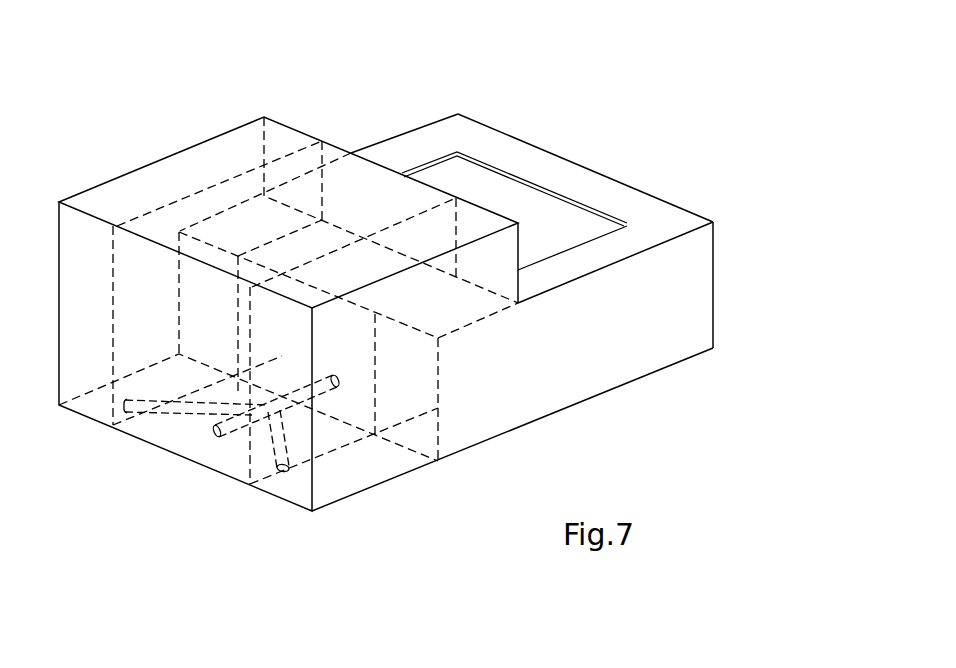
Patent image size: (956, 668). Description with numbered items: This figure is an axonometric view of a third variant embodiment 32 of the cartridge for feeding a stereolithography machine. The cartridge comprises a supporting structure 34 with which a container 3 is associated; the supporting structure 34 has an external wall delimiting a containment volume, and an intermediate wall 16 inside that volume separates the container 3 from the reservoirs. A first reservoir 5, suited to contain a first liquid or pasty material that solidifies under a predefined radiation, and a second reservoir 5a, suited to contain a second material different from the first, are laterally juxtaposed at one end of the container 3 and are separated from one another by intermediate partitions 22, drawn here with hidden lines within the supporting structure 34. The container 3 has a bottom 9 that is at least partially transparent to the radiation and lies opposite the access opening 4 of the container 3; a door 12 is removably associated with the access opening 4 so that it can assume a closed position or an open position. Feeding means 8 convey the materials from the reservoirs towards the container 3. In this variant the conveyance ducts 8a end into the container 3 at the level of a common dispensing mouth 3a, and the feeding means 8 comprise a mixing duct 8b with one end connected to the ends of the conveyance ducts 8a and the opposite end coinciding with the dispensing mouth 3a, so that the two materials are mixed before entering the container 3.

The container 3 is at (483, 123).
The common dispensing mouth 3a is at (350, 388).
The access opening 4 is at (542, 183).
The first reservoir 5 is at (340, 185).
The second reservoir 5a is at (213, 162).
The feeding means 8 is at (215, 448).
The conveyance ducts 8a is at (218, 425).
The mixing duct 8b is at (323, 394).
The bottom 9 is at (687, 362).
The door 12 is at (555, 222).
The intermediate wall 16 is at (417, 432).
The intermediate partitions 22 is at (288, 263).
The variant embodiment of the cartridge 32 is at (725, 62).
The supporting structure 34 is at (700, 300).